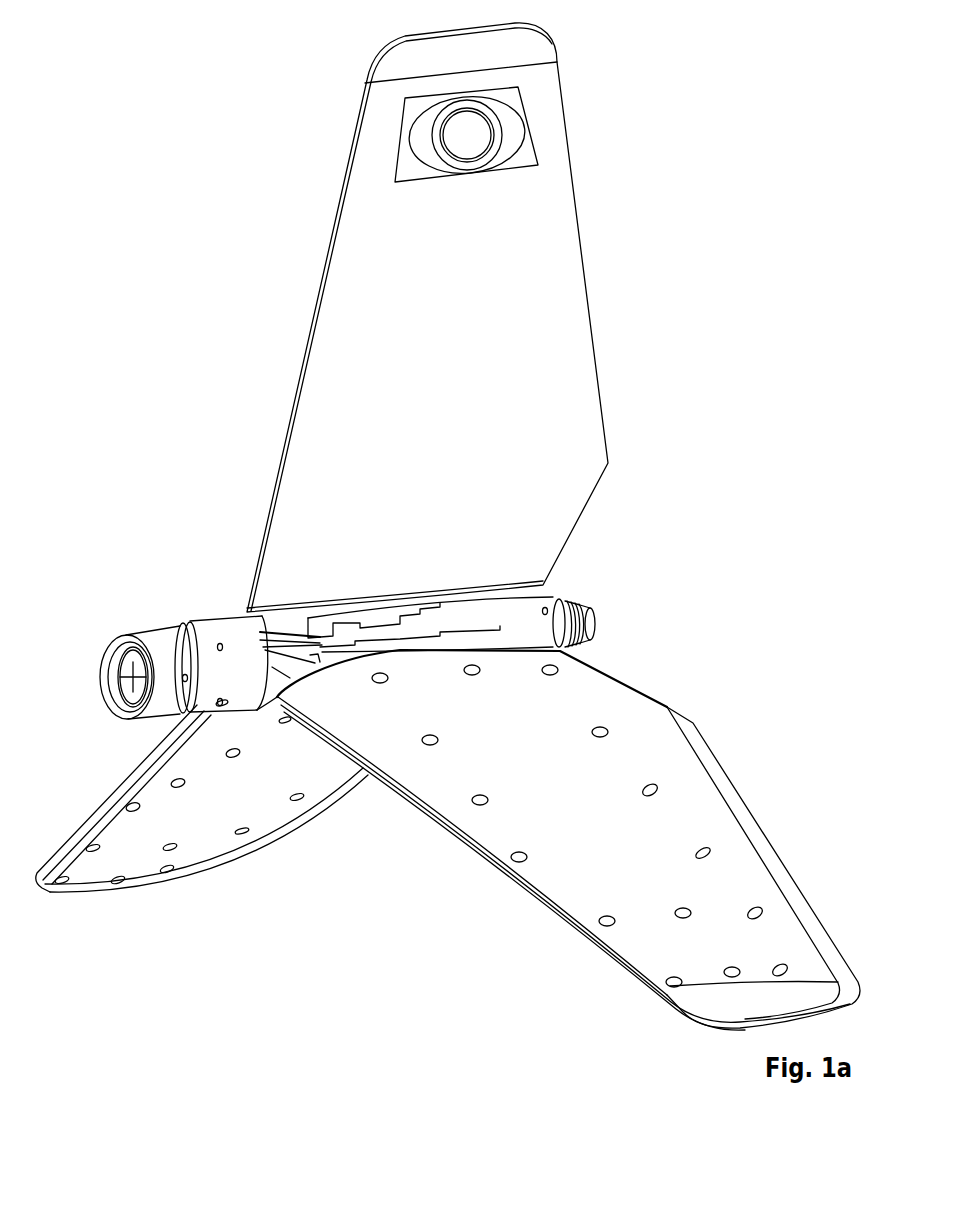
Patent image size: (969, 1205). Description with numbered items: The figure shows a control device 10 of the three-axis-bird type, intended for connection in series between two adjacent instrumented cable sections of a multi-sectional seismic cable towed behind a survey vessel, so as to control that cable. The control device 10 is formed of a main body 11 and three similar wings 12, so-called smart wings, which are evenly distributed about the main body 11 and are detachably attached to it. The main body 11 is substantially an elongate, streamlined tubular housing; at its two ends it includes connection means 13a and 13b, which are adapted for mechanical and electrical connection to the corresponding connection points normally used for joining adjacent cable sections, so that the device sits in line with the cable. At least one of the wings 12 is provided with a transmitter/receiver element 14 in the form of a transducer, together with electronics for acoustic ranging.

The control device 10 is at (220, 275).
The main body 11 is at (213, 603).
The wing 12 is at (448, 526).
The connection means 13a is at (140, 625).
The connection means 13b is at (583, 592).
The transmitter/receiver element 14 is at (541, 129).